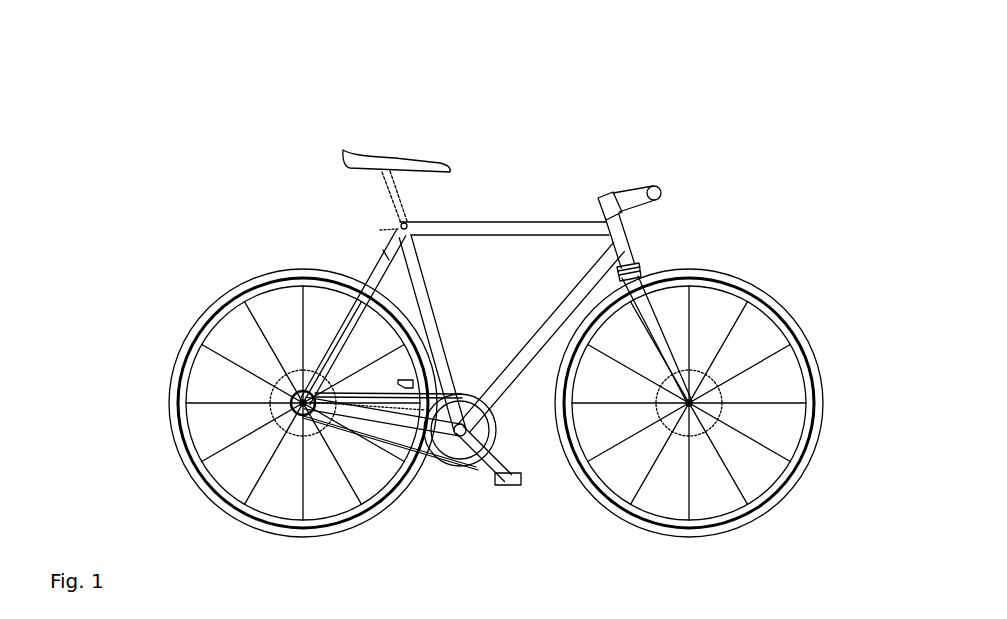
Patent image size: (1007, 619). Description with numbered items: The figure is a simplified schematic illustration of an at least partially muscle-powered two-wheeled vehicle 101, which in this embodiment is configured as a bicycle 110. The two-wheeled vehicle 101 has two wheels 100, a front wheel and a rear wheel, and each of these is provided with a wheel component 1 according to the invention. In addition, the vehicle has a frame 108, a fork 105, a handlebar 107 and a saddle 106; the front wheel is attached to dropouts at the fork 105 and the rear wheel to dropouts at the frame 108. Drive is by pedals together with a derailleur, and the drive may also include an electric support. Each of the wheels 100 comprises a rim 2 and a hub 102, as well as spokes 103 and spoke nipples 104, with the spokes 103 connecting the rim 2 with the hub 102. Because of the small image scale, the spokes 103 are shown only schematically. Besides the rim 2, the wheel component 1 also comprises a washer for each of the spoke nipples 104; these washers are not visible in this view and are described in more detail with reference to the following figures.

The wheel component 1 is at (105, 236).
The rim 2 is at (193, 360).
The wheel 100 is at (195, 317).
The two-wheeled vehicle 101 is at (128, 75).
The hub 102 is at (292, 395).
The spoke 103 is at (233, 443).
The spoke nipple 104 is at (203, 462).
The fork 105 is at (645, 320).
The saddle 106 is at (385, 160).
The handlebar 107 is at (654, 185).
The frame 108 is at (515, 227).
The bicycle 110 is at (253, 106).